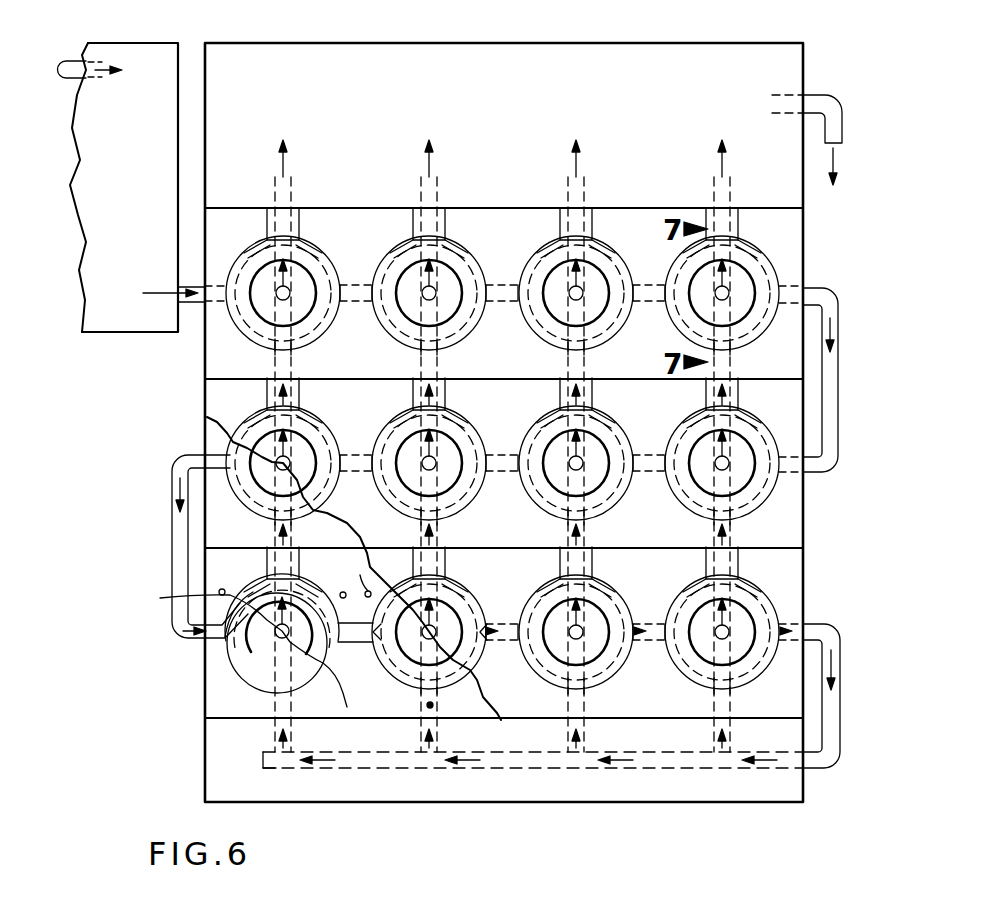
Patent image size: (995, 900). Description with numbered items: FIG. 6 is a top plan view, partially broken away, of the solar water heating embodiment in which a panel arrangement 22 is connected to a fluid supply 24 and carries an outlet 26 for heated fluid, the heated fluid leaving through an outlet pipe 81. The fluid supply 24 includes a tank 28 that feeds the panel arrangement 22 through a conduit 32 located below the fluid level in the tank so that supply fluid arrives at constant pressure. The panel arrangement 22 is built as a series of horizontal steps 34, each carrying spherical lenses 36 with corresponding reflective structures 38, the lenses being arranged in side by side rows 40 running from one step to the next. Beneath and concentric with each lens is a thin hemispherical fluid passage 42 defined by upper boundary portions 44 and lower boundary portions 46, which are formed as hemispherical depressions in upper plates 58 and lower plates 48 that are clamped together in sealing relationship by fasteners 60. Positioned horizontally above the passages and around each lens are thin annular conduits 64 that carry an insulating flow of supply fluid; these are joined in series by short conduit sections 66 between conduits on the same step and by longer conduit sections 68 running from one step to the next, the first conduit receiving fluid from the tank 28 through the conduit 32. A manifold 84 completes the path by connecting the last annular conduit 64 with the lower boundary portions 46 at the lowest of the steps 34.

The panel arrangement 22 is at (380, 43).
The fluid supply 24 is at (170, 26).
The outlet 26 is at (815, 97).
The tank 28 is at (128, 335).
The conduit 32 is at (195, 285).
The steps 34 is at (788, 262).
The spherical lenses 36 is at (403, 272).
The reflective structures 38 is at (426, 239).
The rows 40 is at (460, 623).
The hemispherical fluid passage 42 is at (308, 662).
The upper boundary portions 44 is at (217, 435).
The lower boundary portions 46 is at (240, 657).
The lower plates 48 is at (220, 698).
The upper plates 58 is at (213, 555).
The fasteners 60 is at (223, 589).
The annular conduits 64 is at (235, 472).
The short conduit sections 66 is at (352, 307).
The longer conduit sections 68 is at (838, 320).
The outlet pipe 81 is at (267, 228).
The manifold 84 is at (837, 666).